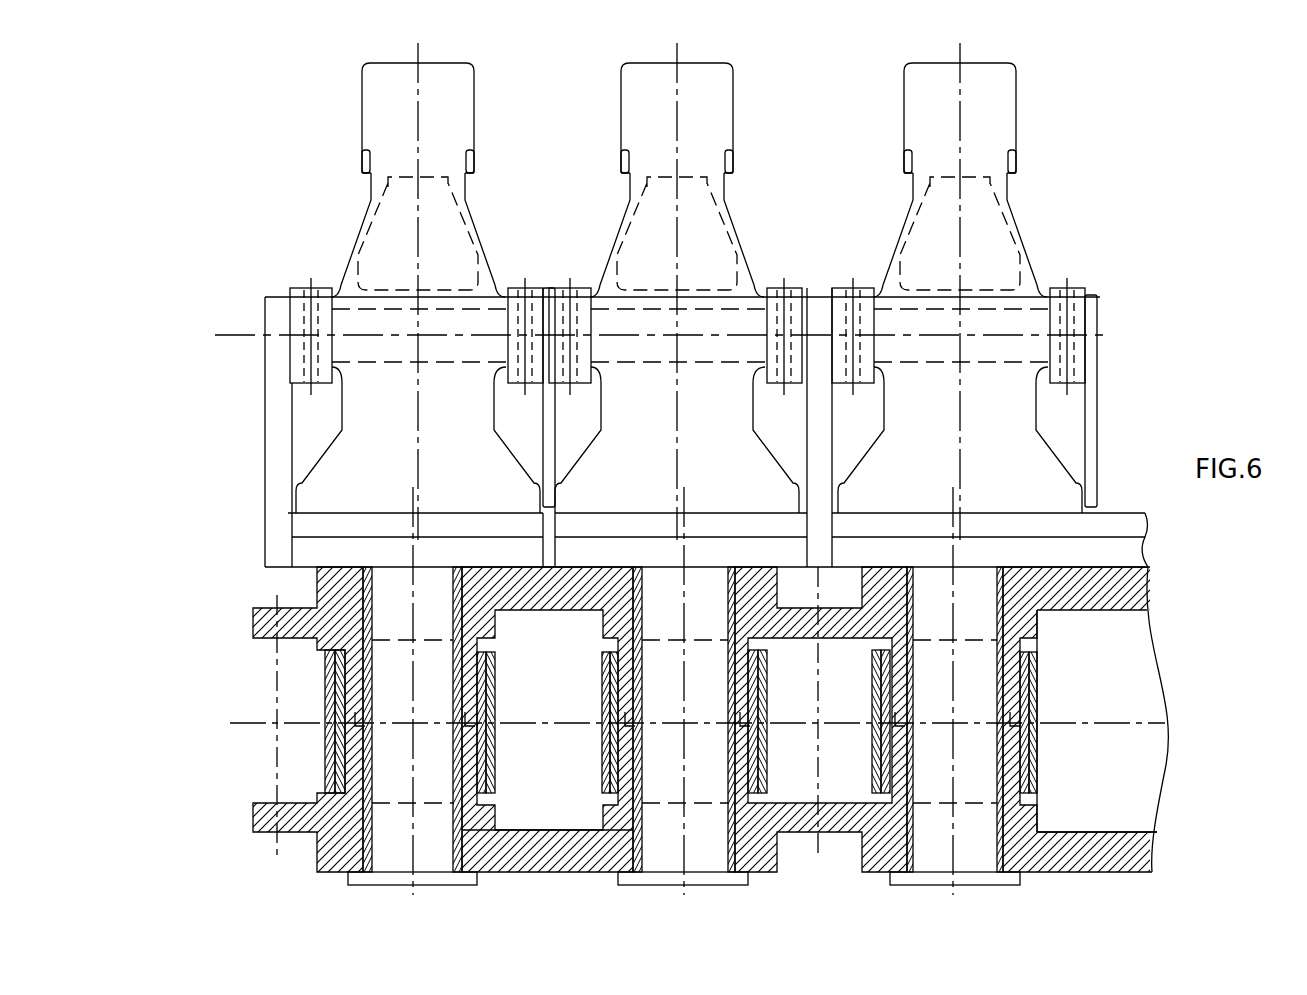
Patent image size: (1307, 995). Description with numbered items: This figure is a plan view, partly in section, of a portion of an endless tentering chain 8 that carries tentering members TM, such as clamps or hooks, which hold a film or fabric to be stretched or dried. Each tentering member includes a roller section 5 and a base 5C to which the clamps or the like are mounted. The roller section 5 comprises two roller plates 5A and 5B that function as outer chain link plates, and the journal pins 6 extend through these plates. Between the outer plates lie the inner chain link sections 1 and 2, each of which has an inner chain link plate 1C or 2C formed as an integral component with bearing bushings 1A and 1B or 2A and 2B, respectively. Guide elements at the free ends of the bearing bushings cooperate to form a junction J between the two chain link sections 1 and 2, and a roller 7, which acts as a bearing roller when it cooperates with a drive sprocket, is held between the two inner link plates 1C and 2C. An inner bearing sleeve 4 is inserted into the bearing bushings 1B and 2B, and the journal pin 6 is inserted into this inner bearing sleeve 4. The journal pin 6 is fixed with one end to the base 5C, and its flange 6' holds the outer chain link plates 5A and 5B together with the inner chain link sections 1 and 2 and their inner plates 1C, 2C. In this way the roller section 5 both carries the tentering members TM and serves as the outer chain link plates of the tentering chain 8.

The tentering members TM is at (382, 120).
The endless tentering chain 8 is at (782, 228).
The base 5C is at (613, 548).
The roller section 5 is at (1180, 875).
The chain link section 1 is at (232, 626).
The inner chain link plate 2C is at (298, 825).
The inner chain link plate 1C is at (320, 645).
The roller plate 5A is at (1052, 628).
The roller plate 5B is at (540, 860).
The roller 7 is at (492, 757).
The bearing bushing 1A is at (617, 688).
The bearing bushing 2A is at (610, 758).
The bearing bushing 1B is at (880, 683).
The bearing bushing 2B is at (893, 772).
The chain link section 2 is at (1060, 814).
The inner bearing sleeve 4 is at (350, 873).
The junction J is at (358, 712).
The journal pin 6 is at (673, 705).
The flange 6' is at (684, 893).